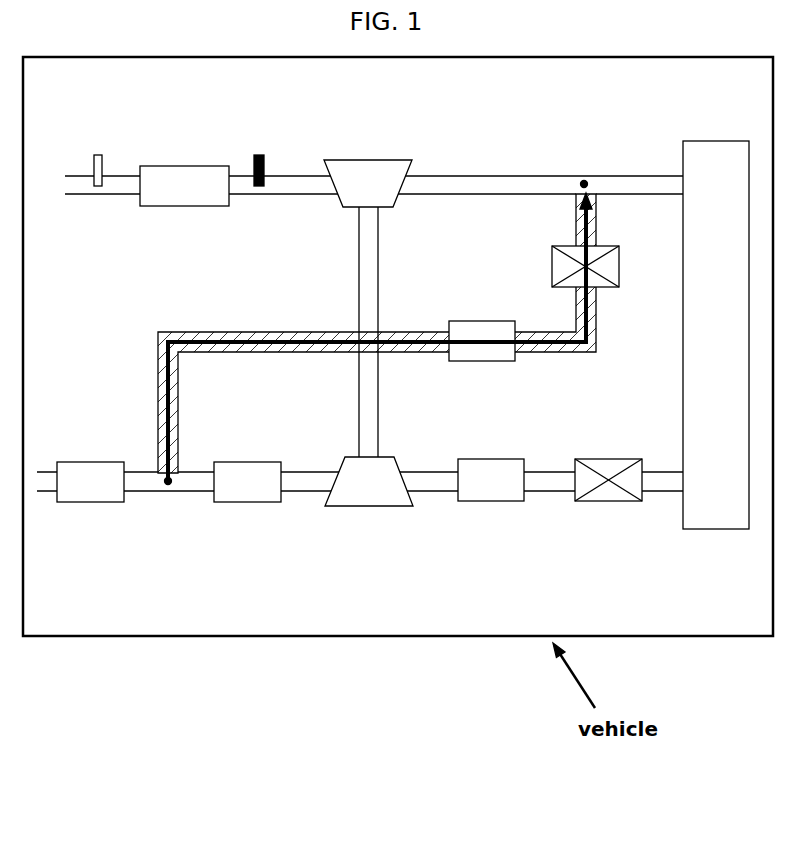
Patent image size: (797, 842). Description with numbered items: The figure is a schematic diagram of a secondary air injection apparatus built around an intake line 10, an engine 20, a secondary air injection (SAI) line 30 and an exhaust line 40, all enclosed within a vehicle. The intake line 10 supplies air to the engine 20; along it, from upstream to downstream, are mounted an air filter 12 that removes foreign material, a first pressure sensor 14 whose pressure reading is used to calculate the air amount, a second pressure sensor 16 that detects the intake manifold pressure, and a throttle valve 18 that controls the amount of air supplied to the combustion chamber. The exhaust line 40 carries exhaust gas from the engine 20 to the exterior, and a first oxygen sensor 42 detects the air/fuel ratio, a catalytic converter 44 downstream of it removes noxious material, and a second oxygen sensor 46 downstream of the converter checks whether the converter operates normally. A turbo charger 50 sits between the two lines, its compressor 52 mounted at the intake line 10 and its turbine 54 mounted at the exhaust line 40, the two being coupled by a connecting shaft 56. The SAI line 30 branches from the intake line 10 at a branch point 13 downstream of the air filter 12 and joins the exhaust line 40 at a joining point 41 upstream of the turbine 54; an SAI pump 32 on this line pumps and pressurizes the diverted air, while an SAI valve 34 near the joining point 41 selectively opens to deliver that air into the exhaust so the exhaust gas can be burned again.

The intake line 10 is at (187, 492).
The air filter 12 is at (92, 502).
The branch point 13 is at (165, 486).
The first pressure sensor 14 is at (248, 502).
The second pressure sensor 16 is at (492, 501).
The throttle valve 18 is at (610, 501).
The engine 20 is at (713, 141).
The secondary air injection (SAI) line 30 is at (410, 331).
The SAI pump 32 is at (480, 321).
The SAI valve 34 is at (619, 265).
The exhaust line 40 is at (491, 175).
The joining point 41 is at (584, 180).
The first oxygen sensor 42 is at (258, 154).
The catalytic converter 44 is at (181, 166).
The second oxygen sensor 46 is at (96, 154).
The turbo charger 50 is at (376, 312).
The compressor 52 is at (370, 506).
The turbine 54 is at (364, 159).
The connecting shaft 56 is at (358, 255).